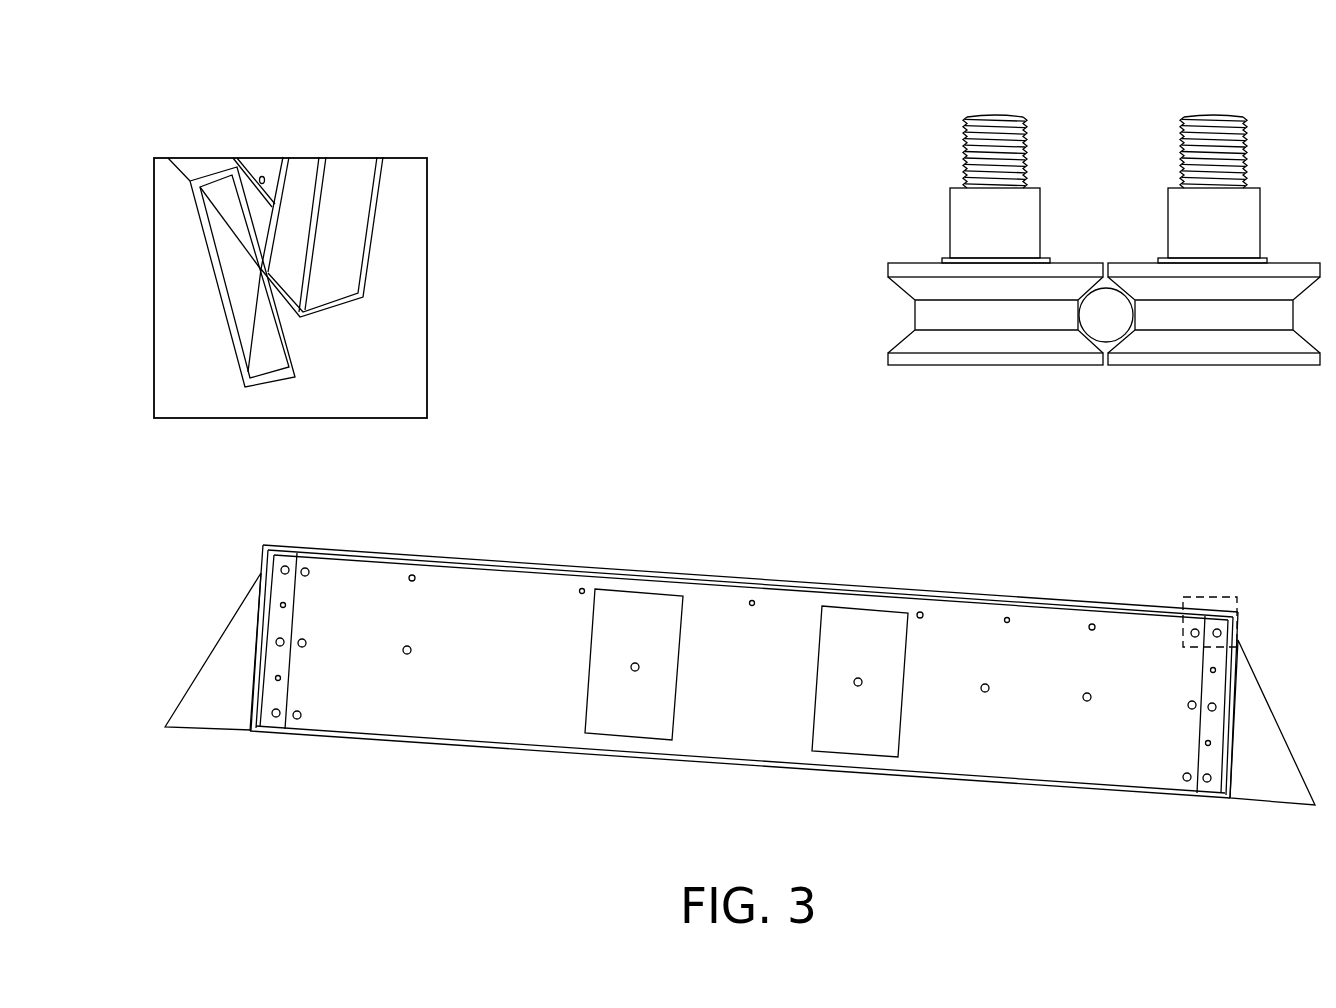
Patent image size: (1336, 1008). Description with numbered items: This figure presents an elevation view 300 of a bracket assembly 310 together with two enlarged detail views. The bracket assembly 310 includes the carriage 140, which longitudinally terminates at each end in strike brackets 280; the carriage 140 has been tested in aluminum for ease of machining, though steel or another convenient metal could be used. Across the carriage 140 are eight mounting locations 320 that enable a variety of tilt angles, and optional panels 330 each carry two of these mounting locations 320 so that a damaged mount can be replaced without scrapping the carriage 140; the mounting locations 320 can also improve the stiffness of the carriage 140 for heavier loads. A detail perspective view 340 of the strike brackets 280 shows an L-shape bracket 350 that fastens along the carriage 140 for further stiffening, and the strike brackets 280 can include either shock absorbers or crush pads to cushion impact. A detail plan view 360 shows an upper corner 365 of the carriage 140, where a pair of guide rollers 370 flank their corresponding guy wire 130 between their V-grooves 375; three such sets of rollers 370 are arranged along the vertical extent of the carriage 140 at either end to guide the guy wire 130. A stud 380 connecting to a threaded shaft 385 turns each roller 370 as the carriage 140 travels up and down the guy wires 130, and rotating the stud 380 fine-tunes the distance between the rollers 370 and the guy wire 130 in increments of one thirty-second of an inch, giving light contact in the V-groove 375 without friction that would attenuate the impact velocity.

The elevation view 300 is at (341, 56).
The bracket assembly 310 is at (173, 527).
The carriage 140 is at (483, 707).
The strike bracket 280 is at (220, 728).
The mounting location 320 is at (990, 680).
The optional panel 330 is at (810, 723).
The upper corner 365 is at (1220, 595).
The detail perspective view 340 is at (445, 172).
The L-shape bracket 350 is at (330, 308).
The detail plan view 360 is at (828, 107).
The guide roller 370 is at (1040, 365).
The V-groove 375 is at (890, 317).
The stud 380 is at (950, 205).
The threaded shaft 385 is at (1183, 142).
The guy wire 130 is at (1098, 290).